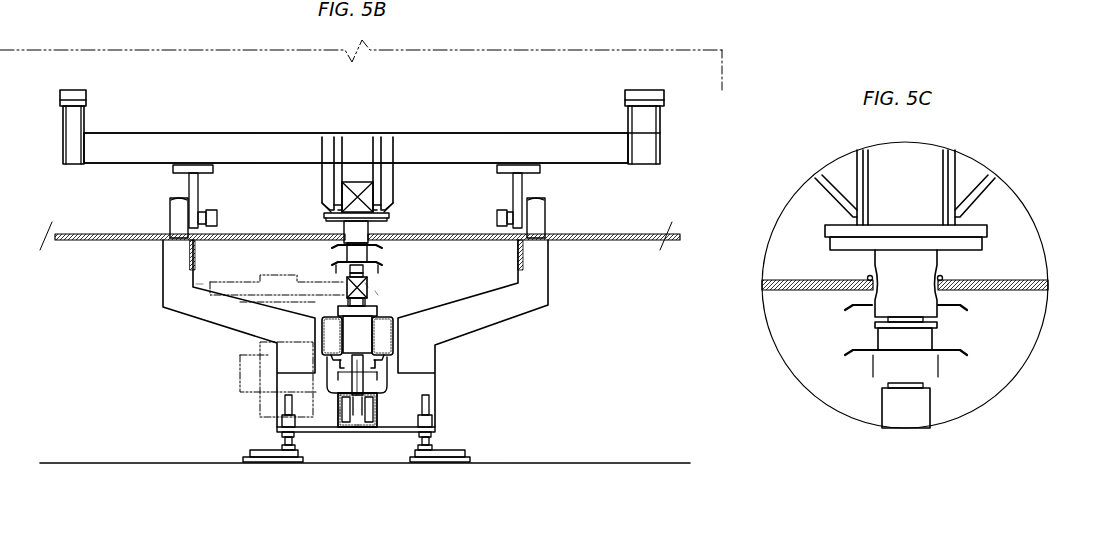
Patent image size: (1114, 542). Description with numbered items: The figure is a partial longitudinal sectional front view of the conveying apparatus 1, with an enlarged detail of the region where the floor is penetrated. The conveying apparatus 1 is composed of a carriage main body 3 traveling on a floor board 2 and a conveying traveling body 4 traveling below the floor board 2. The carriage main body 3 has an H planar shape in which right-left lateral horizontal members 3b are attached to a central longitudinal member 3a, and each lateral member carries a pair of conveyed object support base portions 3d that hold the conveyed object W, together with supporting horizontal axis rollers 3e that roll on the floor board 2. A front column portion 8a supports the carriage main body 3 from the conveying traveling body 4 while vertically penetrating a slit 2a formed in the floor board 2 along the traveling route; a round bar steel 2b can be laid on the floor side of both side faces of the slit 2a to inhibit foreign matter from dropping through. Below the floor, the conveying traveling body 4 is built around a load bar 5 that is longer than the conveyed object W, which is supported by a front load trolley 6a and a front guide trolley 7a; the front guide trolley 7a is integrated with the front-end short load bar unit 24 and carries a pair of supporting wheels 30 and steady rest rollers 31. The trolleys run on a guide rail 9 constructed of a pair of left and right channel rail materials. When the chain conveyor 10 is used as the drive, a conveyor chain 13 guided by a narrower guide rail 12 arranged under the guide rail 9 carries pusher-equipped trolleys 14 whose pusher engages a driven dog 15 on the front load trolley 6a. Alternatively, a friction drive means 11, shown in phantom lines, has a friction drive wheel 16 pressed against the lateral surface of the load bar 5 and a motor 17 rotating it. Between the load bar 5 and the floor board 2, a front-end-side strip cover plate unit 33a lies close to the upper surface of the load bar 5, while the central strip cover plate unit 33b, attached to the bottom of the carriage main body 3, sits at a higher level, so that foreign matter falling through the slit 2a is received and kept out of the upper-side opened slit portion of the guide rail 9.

In FIG. 5B, the conveying apparatus 1 is at (265, 127).
In FIG. 5B, the floor board 2 is at (245, 232).
In FIG. 5C, the floor board 2 is at (1015, 280).
In FIG. 5C, the slit 2a is at (932, 285).
In FIG. 5C, the round bar steel 2b is at (866, 278).
In FIG. 5B, the carriage main body 3 is at (665, 148).
In FIG. 5B, the central longitudinal member 3a is at (358, 185).
In FIG. 5C, the central longitudinal member 3a is at (930, 178).
In FIG. 5B, the right-left lateral horizontal member 3b is at (443, 147).
In FIG. 5B, the conveyed object support base portion 3d is at (72, 92).
In FIG. 5B, the supporting horizontal axis roller 3e is at (175, 217).
In FIG. 5B, the conveying traveling body 4 is at (382, 296).
In FIG. 5B, the load bar 5 is at (372, 288).
In FIG. 5B, the front load trolley 6a is at (391, 357).
In FIG. 5B, the front guide trolley 7a is at (348, 285).
In FIG. 5C, the front guide trolley 7a is at (890, 403).
In FIG. 5B, the front column portion 8a is at (355, 228).
In FIG. 5C, the front column portion 8a is at (893, 263).
In FIG. 5B, the guide rail 9 is at (396, 344).
In FIG. 5B, the chain conveyor 10 is at (384, 419).
In FIG. 5B, the friction drive means 11 is at (196, 284).
In FIG. 5B, the guide rail 12 is at (378, 405).
In FIG. 5B, the conveyor chain 13 is at (336, 412).
In FIG. 5B, the pusher-equipped trolley 14 is at (357, 428).
In FIG. 5B, the driven dog 15 is at (335, 393).
In FIG. 5B, the friction drive wheel 16 is at (230, 288).
In FIG. 5B, the motor 17 is at (268, 367).
In FIG. 5B, the front-end short load bar unit 24 is at (358, 330).
In FIG. 5B, the supporting wheel 30 is at (386, 338).
In FIG. 5B, the steady rest roller 31 is at (318, 318).
In FIG. 5B, the front-end-side strip cover plate unit 33a is at (375, 265).
In FIG. 5C, the front-end-side strip cover plate unit 33a is at (965, 352).
In FIG. 5B, the central strip cover plate unit 33b is at (340, 243).
In FIG. 5C, the central strip cover plate unit 33b is at (840, 306).
In FIG. 5B, the conveyed object W is at (428, 58).